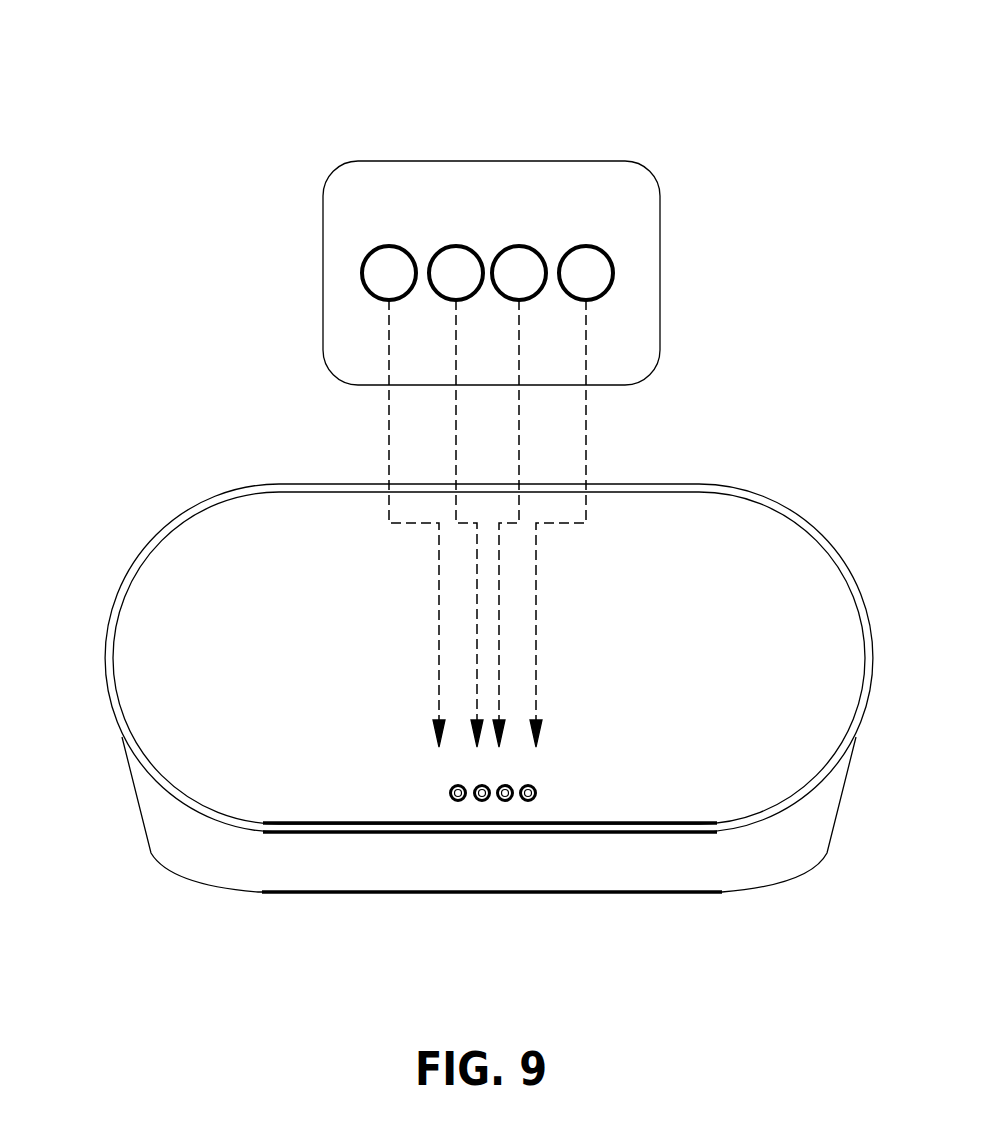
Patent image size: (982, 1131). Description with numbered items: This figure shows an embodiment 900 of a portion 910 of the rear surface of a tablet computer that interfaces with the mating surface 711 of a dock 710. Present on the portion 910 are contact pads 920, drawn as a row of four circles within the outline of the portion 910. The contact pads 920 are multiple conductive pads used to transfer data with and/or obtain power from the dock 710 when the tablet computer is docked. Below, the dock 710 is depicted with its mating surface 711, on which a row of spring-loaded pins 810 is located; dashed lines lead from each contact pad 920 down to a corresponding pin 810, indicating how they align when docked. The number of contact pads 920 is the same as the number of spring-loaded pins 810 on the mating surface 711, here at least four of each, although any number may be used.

The embodiment 900 is at (207, 65).
The portion of rear surface 910 is at (407, 220).
The contact pads 920 is at (585, 247).
The dock 710 is at (133, 497).
The mating surface 711 is at (297, 646).
The spring-loaded pins 810 is at (449, 789).